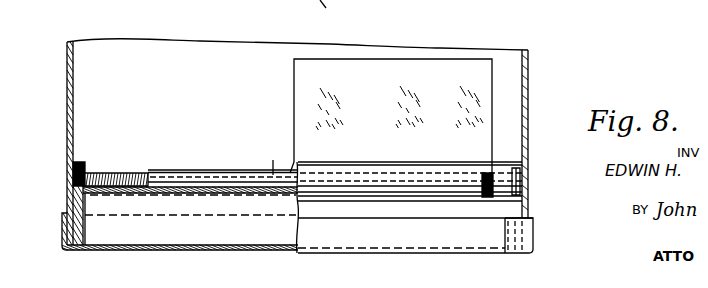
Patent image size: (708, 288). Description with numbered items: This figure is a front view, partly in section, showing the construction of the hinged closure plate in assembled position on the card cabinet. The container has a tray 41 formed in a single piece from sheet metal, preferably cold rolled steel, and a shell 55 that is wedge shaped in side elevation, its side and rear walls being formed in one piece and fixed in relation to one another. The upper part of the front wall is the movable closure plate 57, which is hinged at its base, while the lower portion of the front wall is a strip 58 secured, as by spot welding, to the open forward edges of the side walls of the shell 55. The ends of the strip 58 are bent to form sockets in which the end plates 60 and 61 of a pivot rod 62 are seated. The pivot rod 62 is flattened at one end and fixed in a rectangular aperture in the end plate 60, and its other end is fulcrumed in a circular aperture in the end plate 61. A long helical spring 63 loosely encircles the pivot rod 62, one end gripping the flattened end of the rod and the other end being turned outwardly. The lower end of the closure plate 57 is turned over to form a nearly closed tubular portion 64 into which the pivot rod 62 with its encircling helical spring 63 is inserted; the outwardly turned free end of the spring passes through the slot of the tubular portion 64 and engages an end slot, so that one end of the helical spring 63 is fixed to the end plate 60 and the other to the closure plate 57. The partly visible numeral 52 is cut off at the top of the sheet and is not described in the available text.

The tray 41 is at (530, 238).
The cover 52 is at (290, 5).
The shell 55 is at (80, 74).
The closure plate 57 is at (443, 70).
The strip 58 is at (498, 208).
The end plate 60 is at (84, 166).
The end plate 61 is at (519, 168).
The pivot rod 62 is at (207, 175).
The helical spring 63 is at (148, 172).
The tubular portion 64 is at (272, 172).